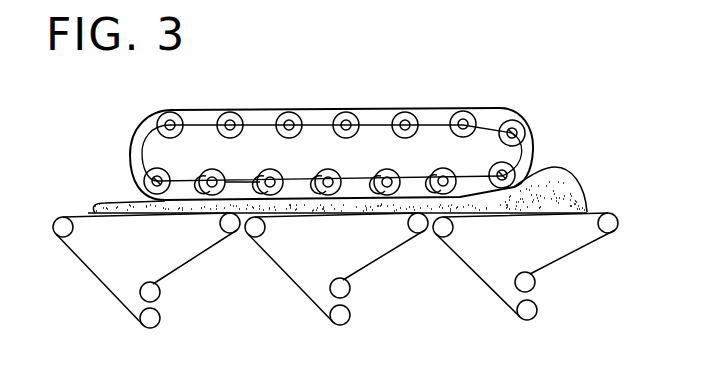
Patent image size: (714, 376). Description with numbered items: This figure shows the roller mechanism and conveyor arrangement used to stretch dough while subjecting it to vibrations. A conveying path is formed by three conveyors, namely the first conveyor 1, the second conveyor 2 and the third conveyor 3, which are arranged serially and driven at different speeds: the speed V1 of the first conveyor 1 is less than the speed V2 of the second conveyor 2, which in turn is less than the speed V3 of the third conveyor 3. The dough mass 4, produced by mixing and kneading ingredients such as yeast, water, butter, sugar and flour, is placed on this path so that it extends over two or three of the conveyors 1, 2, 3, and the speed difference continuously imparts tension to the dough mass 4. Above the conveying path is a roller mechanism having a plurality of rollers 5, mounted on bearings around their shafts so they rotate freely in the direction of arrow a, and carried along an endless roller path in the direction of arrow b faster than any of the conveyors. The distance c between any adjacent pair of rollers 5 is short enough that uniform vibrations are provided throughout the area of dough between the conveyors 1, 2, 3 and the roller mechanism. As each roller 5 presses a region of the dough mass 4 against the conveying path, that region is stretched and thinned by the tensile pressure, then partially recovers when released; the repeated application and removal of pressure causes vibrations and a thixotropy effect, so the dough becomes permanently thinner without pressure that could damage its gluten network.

The first conveyor 1 is at (573, 254).
The second conveyor 2 is at (388, 255).
The third conveyor 3 is at (192, 257).
The dough mass 4 is at (584, 186).
The rollers 5 is at (331, 125).
The arrow a (roller rotation direction) a is at (324, 172).
The arrow b (roller travel direction) b is at (236, 184).
The distance between adjacent rollers c is at (289, 76).
The speed of the first conveyor V1 is at (542, 223).
The speed of the second conveyor V2 is at (357, 223).
The speed of the third conveyor V3 is at (167, 225).